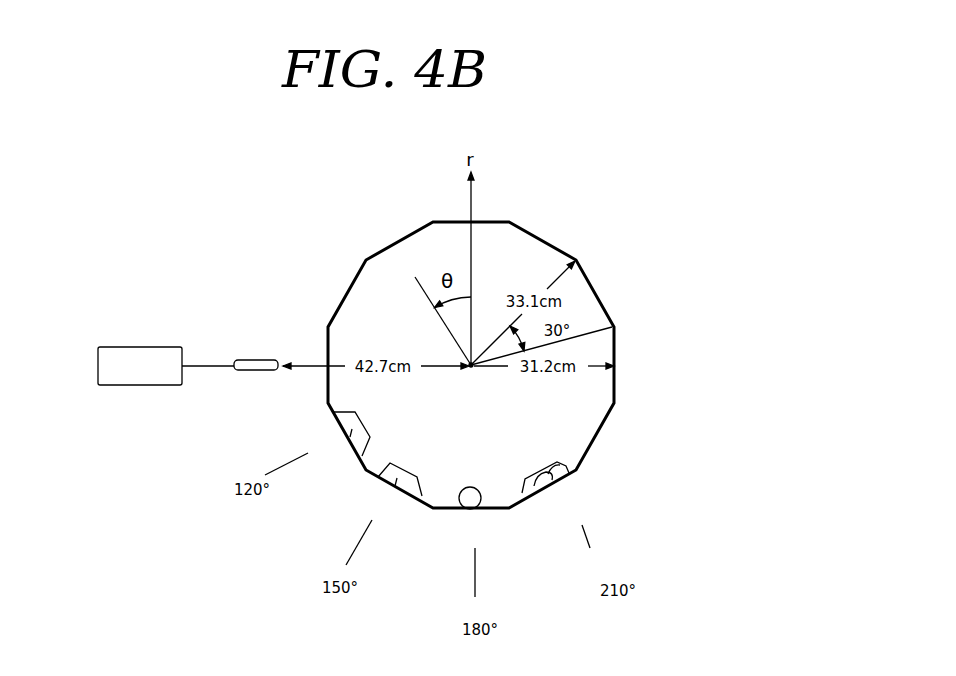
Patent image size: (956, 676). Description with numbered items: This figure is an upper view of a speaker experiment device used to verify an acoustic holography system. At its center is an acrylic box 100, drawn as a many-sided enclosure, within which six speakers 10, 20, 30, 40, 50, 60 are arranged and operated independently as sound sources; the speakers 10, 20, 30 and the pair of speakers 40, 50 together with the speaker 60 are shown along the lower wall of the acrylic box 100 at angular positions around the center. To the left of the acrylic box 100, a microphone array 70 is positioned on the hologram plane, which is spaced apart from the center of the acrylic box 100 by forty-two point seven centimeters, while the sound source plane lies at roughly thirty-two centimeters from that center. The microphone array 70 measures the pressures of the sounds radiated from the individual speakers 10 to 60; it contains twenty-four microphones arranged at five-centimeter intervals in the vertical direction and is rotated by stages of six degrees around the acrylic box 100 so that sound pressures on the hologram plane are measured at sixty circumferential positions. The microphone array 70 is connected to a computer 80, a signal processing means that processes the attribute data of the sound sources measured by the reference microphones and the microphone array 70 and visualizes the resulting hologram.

The acrylic box 100 is at (548, 240).
The speaker 10 is at (342, 453).
The speaker 20 is at (393, 487).
The speaker 30 is at (584, 516).
The speaker 40 is at (436, 541).
The speaker 50 is at (468, 502).
The speaker 60 is at (547, 493).
The microphone array 70 is at (257, 371).
The computer 80 is at (142, 386).